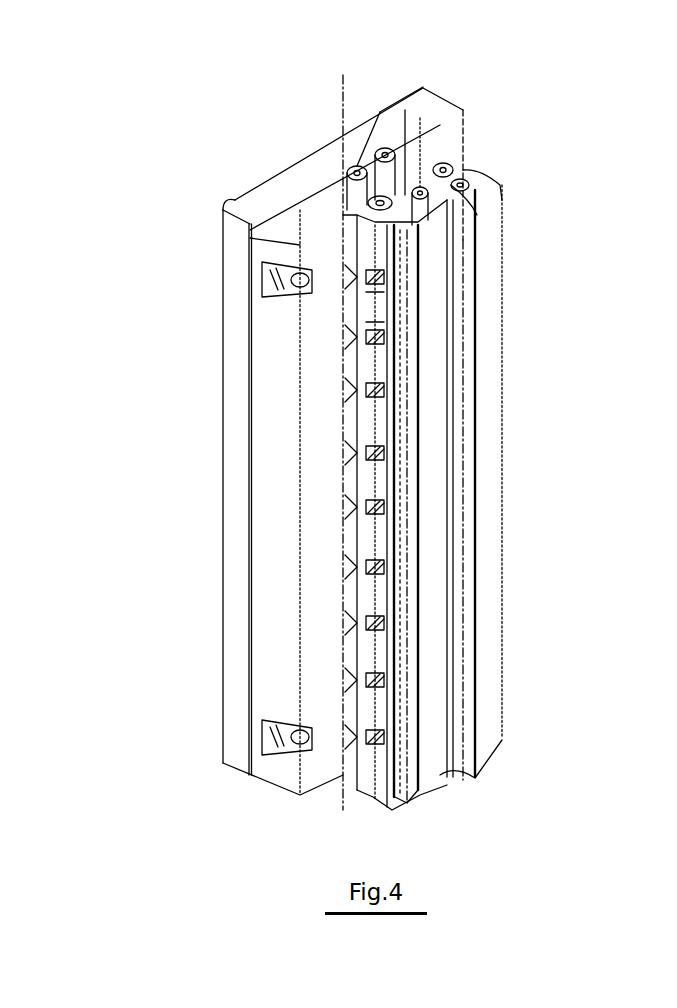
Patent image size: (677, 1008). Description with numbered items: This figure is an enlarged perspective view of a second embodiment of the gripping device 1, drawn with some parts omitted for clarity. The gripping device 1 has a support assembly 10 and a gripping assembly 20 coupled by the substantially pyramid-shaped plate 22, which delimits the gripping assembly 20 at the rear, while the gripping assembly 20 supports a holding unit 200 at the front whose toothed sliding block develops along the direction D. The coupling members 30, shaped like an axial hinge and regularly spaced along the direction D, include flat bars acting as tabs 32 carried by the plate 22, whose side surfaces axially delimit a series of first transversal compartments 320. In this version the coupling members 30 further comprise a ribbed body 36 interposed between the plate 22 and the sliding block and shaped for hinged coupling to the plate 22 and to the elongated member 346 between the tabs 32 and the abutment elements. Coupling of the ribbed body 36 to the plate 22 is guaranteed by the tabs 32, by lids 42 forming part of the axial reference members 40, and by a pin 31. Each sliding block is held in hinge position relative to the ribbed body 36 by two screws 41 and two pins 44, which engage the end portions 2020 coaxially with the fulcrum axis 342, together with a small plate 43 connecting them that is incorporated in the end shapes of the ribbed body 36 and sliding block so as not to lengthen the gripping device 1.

The gripping device 1 is at (125, 95).
The support assembly 10 is at (262, 138).
The gripping assembly 20 is at (545, 102).
The plate 22 is at (272, 488).
The coupling members 30 is at (318, 800).
The pin 31 is at (400, 185).
The flat bars (tabs) 32 is at (346, 688).
The ribbed body 36 is at (363, 318).
The axial reference members 40 is at (232, 170).
The screws 41 is at (357, 200).
The lids 42 is at (387, 145).
The small plate 43 is at (382, 198).
The pins 44 is at (492, 186).
The holding unit 200 is at (327, 173).
The first transversal compartments 320 is at (325, 421).
The fulcrum axis 342 is at (408, 818).
The elongated member 346 is at (405, 651).
The end portions 2020 is at (425, 195).
The direction D is at (343, 100).